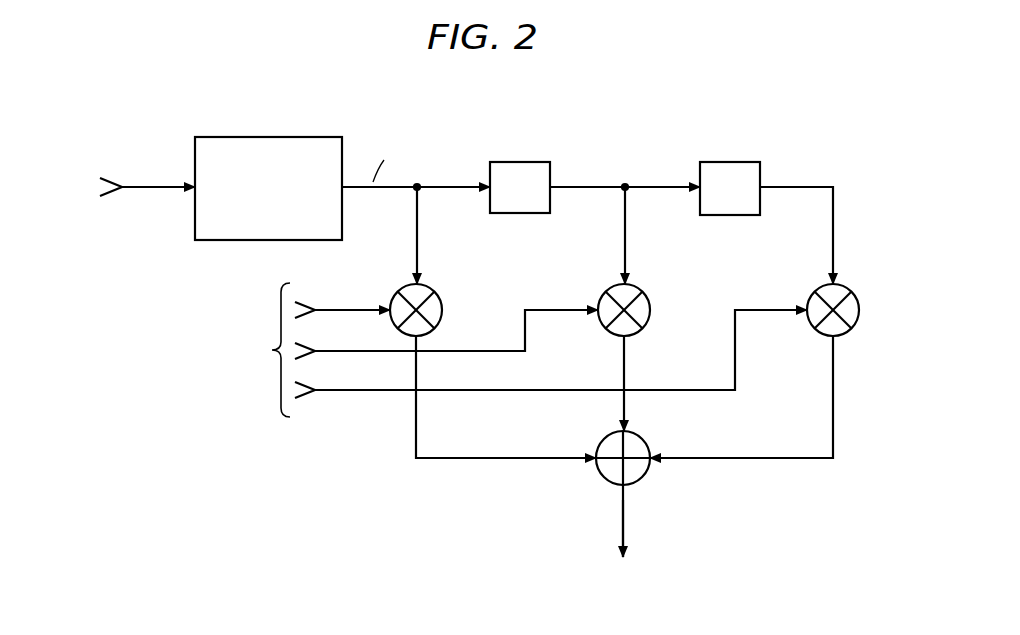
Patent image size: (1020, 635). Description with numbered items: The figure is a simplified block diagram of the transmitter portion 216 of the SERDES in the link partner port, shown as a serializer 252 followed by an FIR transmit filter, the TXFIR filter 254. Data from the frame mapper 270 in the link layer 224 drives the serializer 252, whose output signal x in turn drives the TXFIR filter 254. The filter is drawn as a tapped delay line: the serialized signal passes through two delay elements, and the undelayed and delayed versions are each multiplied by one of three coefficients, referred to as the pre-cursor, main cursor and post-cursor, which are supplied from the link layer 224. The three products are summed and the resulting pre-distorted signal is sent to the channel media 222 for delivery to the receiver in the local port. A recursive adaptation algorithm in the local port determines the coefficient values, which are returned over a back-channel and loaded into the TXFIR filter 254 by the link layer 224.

The transmitter portion 216 is at (692, 111).
The serializer 252 is at (217, 137).
The TXFIR filter 254 is at (803, 145).
The frame mapper 270 is at (124, 188).
The link layer 224 is at (250, 350).
The channel media 222 is at (622, 547).